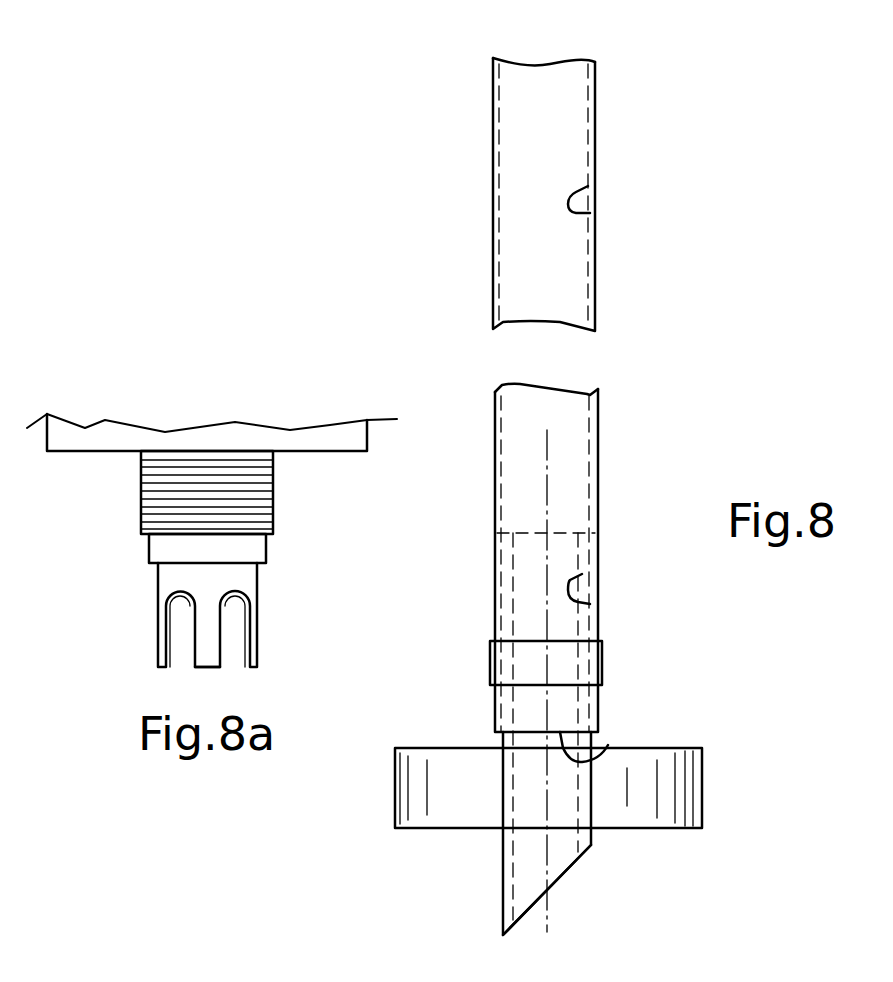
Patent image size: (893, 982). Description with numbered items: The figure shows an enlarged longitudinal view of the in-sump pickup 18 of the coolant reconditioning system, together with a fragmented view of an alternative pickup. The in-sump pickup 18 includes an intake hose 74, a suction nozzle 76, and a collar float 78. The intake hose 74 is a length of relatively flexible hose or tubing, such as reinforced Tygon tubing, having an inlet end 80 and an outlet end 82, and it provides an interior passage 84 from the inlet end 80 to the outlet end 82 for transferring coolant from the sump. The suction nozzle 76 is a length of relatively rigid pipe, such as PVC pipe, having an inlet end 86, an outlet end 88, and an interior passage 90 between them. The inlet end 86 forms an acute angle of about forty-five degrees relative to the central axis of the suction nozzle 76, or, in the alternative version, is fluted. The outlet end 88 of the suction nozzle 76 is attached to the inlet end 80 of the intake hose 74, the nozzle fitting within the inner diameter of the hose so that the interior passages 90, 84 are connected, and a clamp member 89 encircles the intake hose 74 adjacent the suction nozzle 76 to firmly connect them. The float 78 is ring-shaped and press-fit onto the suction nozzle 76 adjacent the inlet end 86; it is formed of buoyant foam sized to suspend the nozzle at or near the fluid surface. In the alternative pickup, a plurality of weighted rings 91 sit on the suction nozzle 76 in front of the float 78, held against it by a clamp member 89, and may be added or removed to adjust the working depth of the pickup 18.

In FIG. 8, the in-sump pickup 18 is at (428, 332).
In FIG. 8, the intake hose 74 is at (598, 430).
In FIG. 8, the suction nozzle 76 is at (502, 873).
In FIG. 8A, the suction nozzle 76 is at (158, 608).
In FIG. 8, the collar float 78 is at (395, 793).
In FIG. 8A, the collar float 78 is at (213, 427).
In FIG. 8, the inlet end 80 is at (608, 745).
In FIG. 8, the outlet end 82 is at (565, 60).
In FIG. 8, the interior passage 84 is at (592, 211).
In FIG. 8, the inlet end 86 is at (562, 878).
In FIG. 8A, the inlet end 86 is at (215, 667).
In FIG. 8, the outlet end 88 is at (556, 533).
In FIG. 8, the clamp member 89 is at (490, 663).
In FIG. 8A, the clamp member 89 is at (148, 548).
In FIG. 8, the interior passage 90 is at (592, 606).
In FIG. 8A, the weighted rings 91 is at (275, 487).